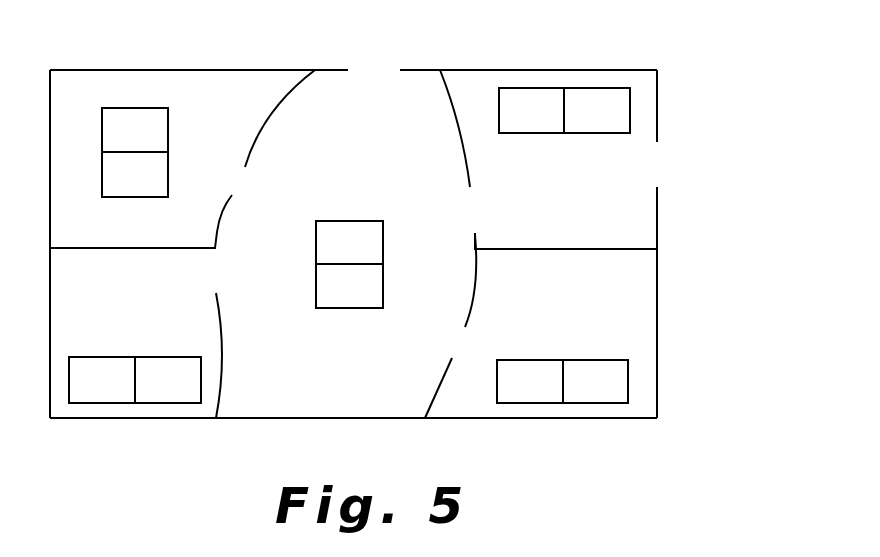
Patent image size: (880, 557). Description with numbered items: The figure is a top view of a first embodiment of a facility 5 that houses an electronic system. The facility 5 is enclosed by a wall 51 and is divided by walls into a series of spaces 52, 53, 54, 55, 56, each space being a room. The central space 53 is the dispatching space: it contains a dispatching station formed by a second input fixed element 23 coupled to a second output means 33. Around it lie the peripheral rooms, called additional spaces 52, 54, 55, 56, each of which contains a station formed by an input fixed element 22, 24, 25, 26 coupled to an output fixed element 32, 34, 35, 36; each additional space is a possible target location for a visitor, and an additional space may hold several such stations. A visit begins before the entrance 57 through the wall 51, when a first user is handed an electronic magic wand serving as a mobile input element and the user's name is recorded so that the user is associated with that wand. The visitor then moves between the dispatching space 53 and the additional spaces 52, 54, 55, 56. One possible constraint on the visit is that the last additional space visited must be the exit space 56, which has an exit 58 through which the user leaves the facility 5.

The facility 5 is at (409, 251).
The wall 51 is at (545, 419).
The additional space 52 is at (182, 159).
The central space 53 is at (383, 319).
The additional space 54 is at (145, 355).
The additional space 55 is at (546, 319).
The exit space 56 is at (548, 159).
The entrance 57 is at (383, 54).
The exit 58 is at (672, 162).
The input fixed element 22 is at (150, 145).
The output fixed element 32 is at (150, 185).
The second input fixed element 23 is at (365, 254).
The second output means 33 is at (365, 299).
The input fixed element 24 is at (118, 392).
The output fixed element 34 is at (183, 392).
The input fixed element 25 is at (547, 396).
The output fixed element 35 is at (612, 396).
The input fixed element 26 is at (547, 124).
The output fixed element 36 is at (612, 124).